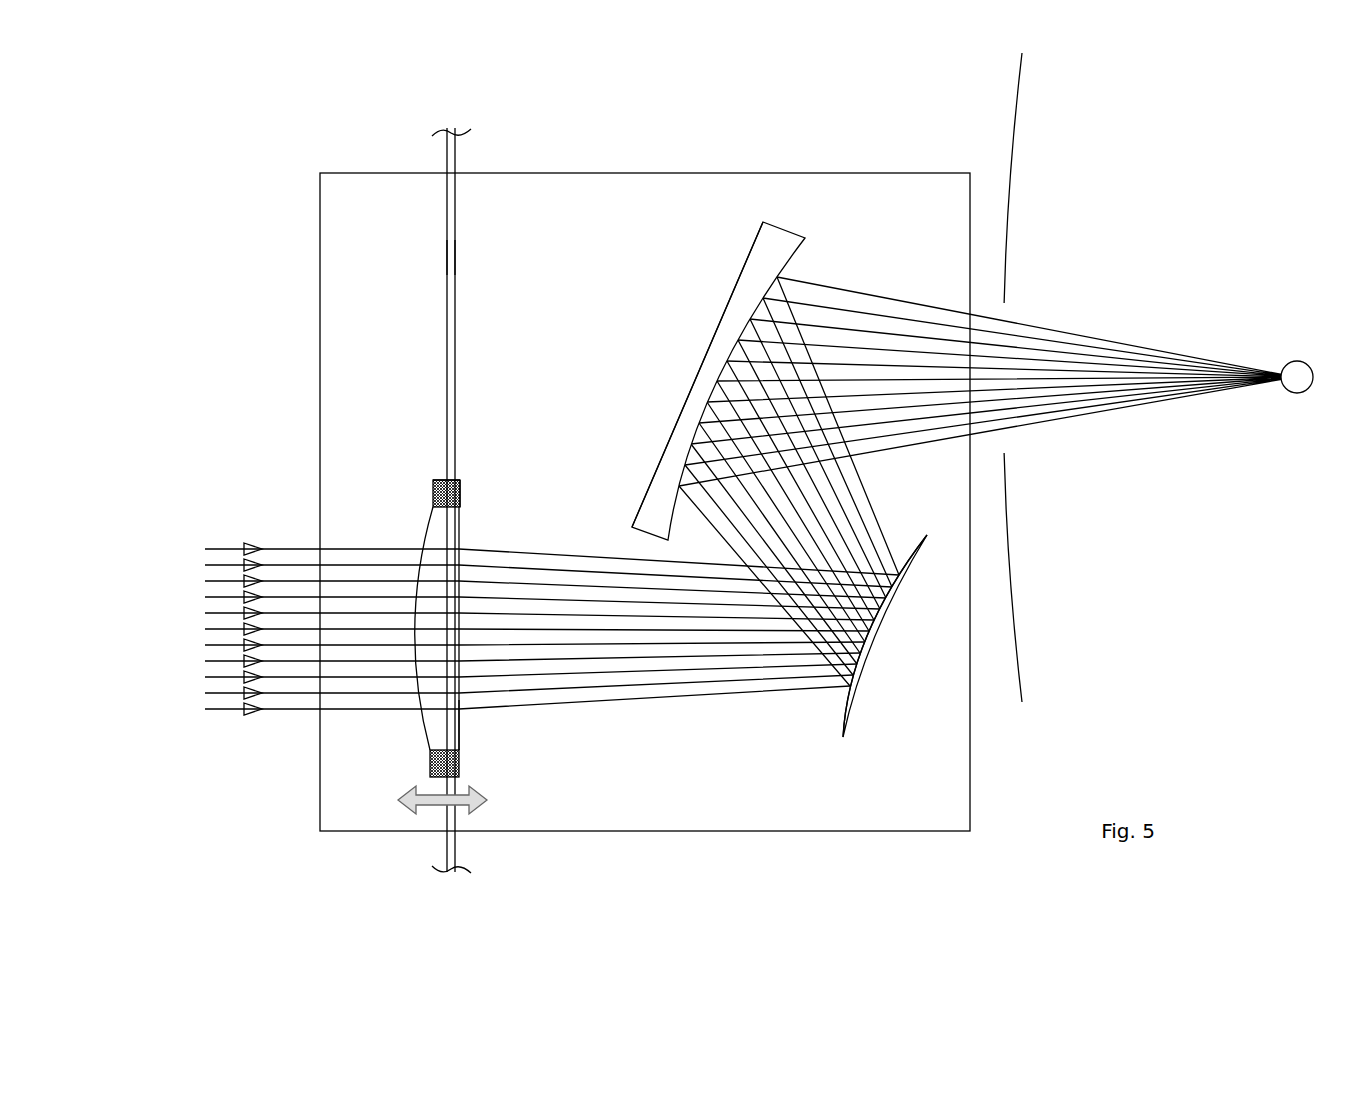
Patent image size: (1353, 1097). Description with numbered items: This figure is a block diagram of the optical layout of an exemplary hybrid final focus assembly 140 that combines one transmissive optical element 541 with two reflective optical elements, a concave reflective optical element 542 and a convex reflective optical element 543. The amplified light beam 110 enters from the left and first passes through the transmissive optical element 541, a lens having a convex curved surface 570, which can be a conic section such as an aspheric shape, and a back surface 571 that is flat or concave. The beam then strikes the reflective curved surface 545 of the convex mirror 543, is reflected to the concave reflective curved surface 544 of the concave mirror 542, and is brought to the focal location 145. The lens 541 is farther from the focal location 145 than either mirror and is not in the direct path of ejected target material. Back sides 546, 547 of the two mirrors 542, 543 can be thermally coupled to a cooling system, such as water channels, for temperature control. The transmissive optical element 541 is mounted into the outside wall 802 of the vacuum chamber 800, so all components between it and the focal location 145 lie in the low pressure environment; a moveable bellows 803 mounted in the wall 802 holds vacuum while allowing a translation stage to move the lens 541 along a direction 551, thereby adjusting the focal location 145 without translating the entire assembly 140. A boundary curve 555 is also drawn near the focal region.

The amplified light beam 110 is at (303, 548).
The final focus assembly 140 is at (634, 173).
The focal location 145 is at (1293, 393).
The transmissive optical element 541 is at (459, 725).
The concave reflective optical element 542 is at (765, 222).
The convex reflective optical element 543 is at (848, 730).
The reflective curved surface 544 is at (795, 280).
The reflective curved surface 545 is at (850, 690).
The back side 546 is at (688, 398).
The back side 547 is at (875, 648).
The direction 551 is at (430, 812).
The field of view boundary 555 is at (1012, 112).
The curved surface 570 is at (413, 583).
The back surface 571 is at (460, 507).
The vacuum chamber 800 is at (450, 485).
The outside wall 802 is at (447, 258).
The moveable bellows 803 is at (432, 493).